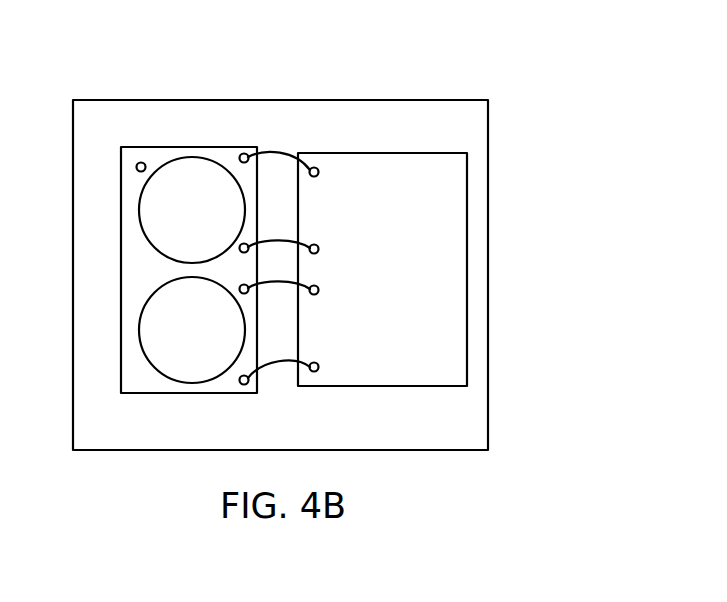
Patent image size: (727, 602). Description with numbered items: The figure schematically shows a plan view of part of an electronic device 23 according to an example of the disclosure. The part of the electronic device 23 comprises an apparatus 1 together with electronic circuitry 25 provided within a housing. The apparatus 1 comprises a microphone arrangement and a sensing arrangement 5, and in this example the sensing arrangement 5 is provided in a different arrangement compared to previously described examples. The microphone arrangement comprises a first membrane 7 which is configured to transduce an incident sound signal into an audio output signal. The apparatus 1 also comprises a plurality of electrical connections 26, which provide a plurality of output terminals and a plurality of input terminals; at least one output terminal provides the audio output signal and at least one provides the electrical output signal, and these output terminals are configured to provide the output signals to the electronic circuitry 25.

The apparatus 1 is at (138, 163).
The sensing arrangement 5 is at (192, 330).
The first membrane 7 is at (192, 210).
The electronic device 23 is at (497, 147).
The electronic circuitry 25 is at (382, 269).
The electrical connections 26 is at (280, 152).